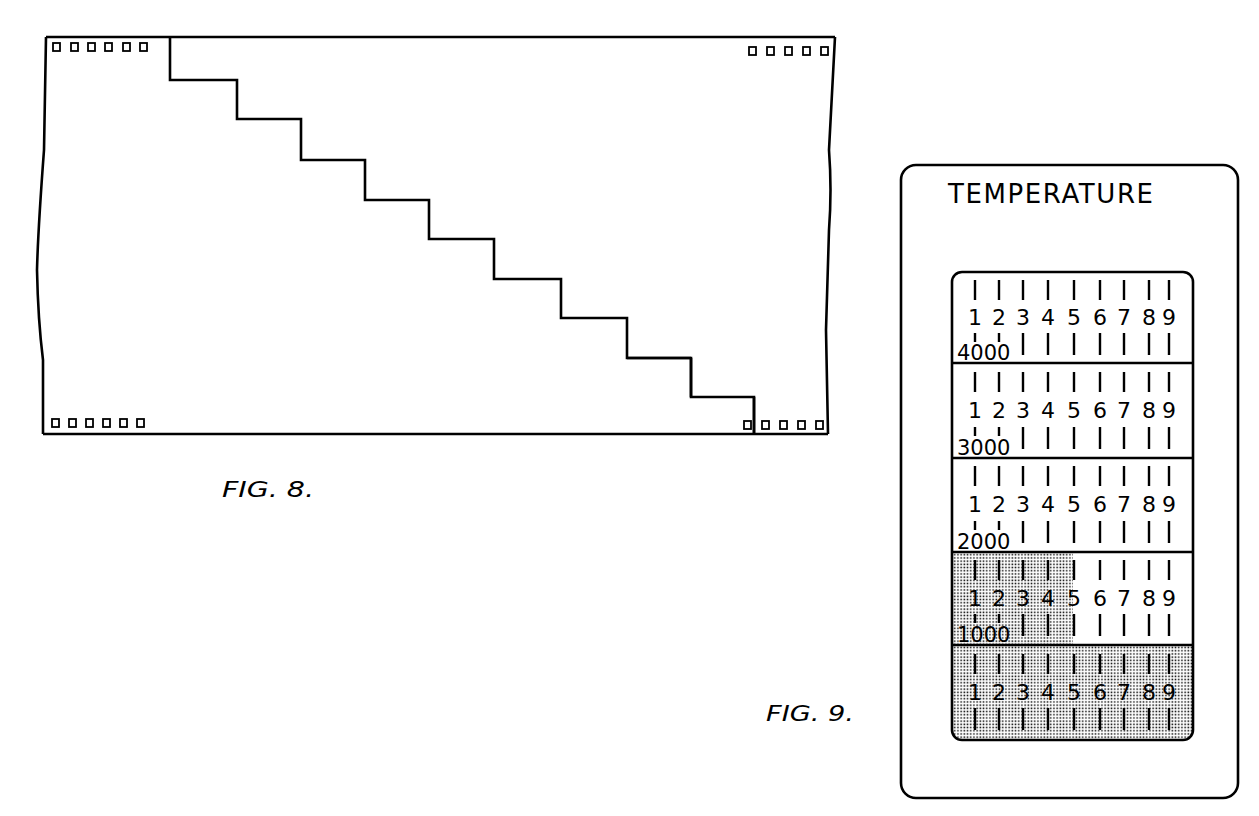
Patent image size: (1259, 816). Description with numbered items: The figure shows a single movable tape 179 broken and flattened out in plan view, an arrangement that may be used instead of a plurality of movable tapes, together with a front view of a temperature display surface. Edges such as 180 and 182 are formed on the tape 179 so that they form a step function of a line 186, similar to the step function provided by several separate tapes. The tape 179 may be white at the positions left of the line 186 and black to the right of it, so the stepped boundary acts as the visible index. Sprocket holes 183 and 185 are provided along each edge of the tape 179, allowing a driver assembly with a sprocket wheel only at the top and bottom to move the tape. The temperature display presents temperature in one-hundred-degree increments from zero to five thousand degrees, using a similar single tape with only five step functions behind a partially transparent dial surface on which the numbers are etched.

The tape 179 is at (608, 121).
The edge 180 is at (756, 402).
The edge 182 is at (693, 372).
The sprocket holes 183 is at (108, 52).
The sprocket holes 185 is at (104, 429).
The line 186 is at (661, 353).